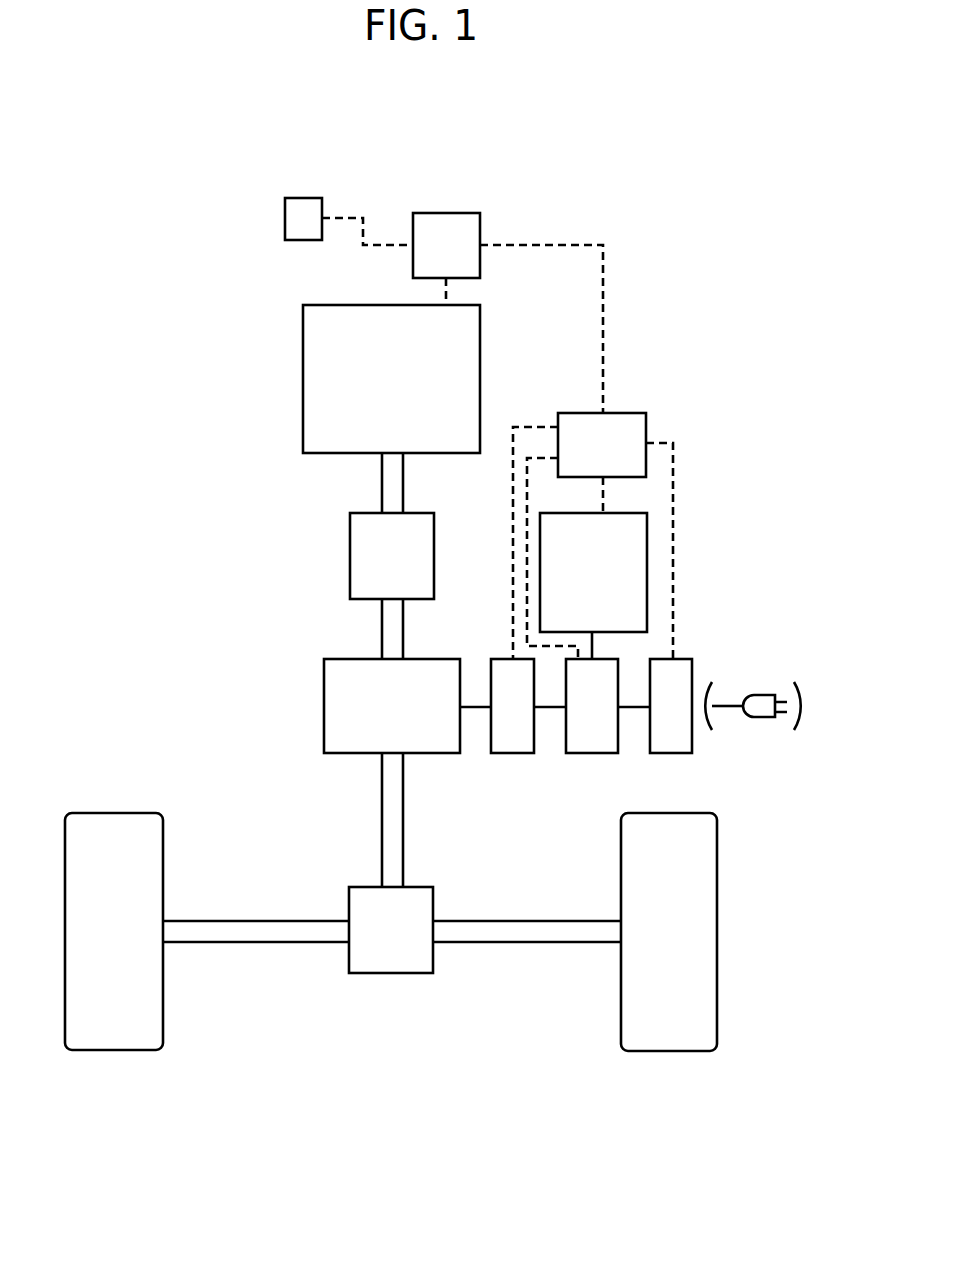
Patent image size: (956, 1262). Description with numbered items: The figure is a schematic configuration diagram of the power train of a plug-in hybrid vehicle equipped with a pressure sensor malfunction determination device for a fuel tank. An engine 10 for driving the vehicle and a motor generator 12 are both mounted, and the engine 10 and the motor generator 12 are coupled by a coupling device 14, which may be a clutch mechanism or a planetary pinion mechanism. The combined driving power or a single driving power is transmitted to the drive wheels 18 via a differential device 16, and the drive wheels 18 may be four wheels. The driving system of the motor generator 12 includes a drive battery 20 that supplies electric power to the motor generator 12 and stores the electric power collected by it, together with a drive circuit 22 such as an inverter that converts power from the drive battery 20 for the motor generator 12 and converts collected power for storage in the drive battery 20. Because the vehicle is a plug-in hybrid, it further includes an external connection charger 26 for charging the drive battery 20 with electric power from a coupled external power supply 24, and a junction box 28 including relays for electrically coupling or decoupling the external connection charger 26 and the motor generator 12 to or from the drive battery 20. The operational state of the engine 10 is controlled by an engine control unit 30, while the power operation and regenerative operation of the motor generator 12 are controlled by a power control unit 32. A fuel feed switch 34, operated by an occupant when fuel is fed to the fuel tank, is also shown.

The engine 10 is at (303, 376).
The motor generator 12 is at (324, 708).
The coupling device 14 is at (350, 553).
The differential device 16 is at (390, 973).
The drive wheels 18 is at (113, 1050).
The drive battery 20 is at (647, 568).
The drive circuit 22 is at (510, 753).
The external power supply 24 is at (765, 737).
The external connection charger 26 is at (675, 753).
The junction box 28 is at (590, 753).
The engine control unit 30 is at (446, 213).
The power control unit 32 is at (646, 418).
The fuel feed switch 34 is at (303, 198).